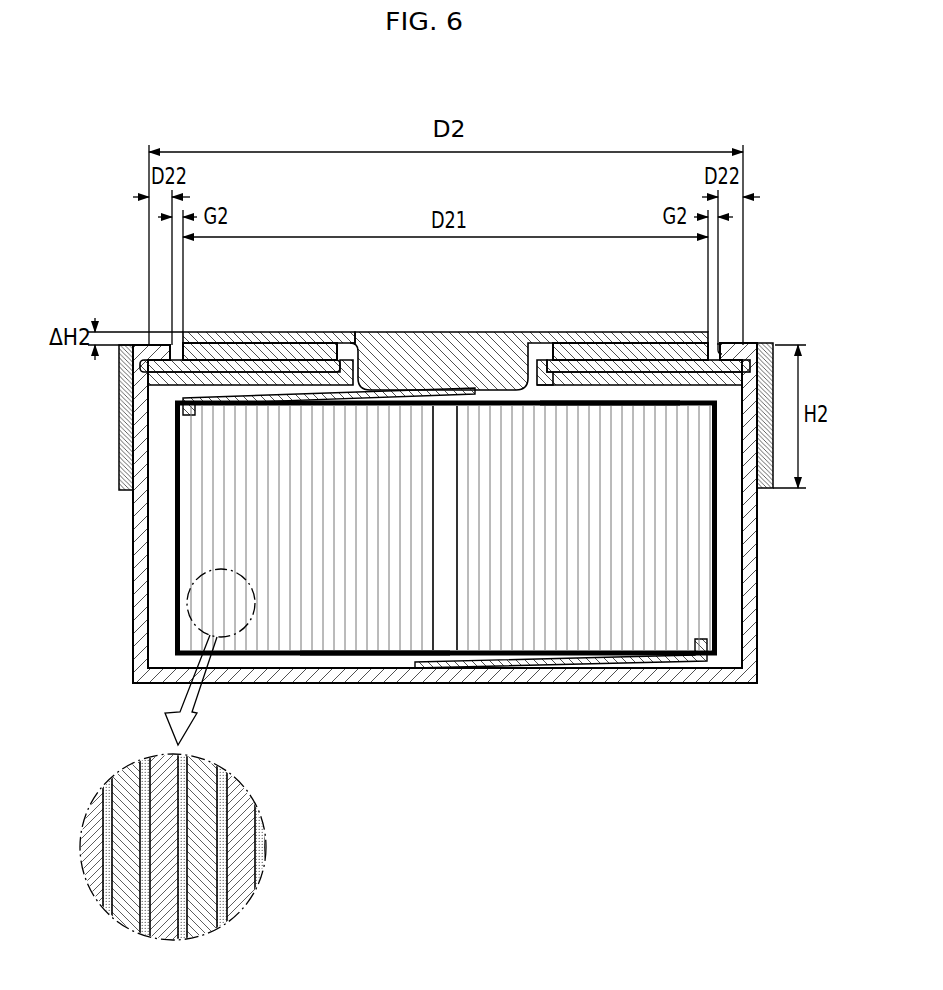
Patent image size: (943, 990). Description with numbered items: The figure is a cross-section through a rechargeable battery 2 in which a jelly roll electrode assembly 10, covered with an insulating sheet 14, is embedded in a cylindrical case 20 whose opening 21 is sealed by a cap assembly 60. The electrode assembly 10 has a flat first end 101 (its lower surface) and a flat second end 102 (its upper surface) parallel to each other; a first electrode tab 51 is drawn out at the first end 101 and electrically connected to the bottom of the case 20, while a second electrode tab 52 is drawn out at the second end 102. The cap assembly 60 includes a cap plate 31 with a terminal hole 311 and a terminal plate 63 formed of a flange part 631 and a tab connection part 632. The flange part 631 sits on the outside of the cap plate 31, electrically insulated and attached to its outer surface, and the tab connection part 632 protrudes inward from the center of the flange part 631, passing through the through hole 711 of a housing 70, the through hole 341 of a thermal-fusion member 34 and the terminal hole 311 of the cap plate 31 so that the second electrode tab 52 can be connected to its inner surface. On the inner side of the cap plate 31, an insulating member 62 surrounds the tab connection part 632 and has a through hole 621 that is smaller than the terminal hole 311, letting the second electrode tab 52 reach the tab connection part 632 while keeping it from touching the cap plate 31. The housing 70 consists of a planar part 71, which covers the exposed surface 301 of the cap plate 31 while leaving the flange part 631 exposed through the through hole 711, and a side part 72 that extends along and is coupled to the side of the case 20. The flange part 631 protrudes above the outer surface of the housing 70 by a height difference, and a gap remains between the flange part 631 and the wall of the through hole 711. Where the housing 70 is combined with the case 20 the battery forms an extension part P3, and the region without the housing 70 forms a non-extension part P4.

The rechargeable battery 2 is at (458, 108).
The electrode assembly 10 is at (490, 511).
The insulating sheet 14 is at (718, 580).
The case 20 is at (132, 545).
The opening 21 is at (141, 366).
The exposed surface 301 is at (163, 352).
The cap plate 31 is at (226, 325).
The terminal hole 311 is at (548, 364).
The thermal-fusion member 34 is at (233, 353).
The through hole 341 is at (560, 350).
The first electrode tab 51 is at (668, 664).
The second electrode tab 52 is at (292, 395).
The cap assembly 60 is at (550, 398).
The insulating member 62 is at (200, 378).
The through hole 621 is at (535, 372).
The terminal plate 63 is at (445, 314).
The flange part 631 is at (327, 338).
The tab connection part 632 is at (340, 274).
The housing 70 is at (119, 406).
The planar part 71 is at (760, 344).
The through hole 711 is at (720, 345).
The side part 72 is at (772, 450).
The first end 101 is at (372, 658).
The second end 102 is at (608, 397).
The extension part P3 is at (118, 457).
The non-extension part P4 is at (118, 592).